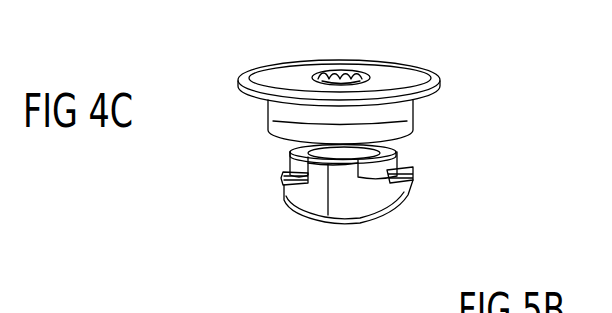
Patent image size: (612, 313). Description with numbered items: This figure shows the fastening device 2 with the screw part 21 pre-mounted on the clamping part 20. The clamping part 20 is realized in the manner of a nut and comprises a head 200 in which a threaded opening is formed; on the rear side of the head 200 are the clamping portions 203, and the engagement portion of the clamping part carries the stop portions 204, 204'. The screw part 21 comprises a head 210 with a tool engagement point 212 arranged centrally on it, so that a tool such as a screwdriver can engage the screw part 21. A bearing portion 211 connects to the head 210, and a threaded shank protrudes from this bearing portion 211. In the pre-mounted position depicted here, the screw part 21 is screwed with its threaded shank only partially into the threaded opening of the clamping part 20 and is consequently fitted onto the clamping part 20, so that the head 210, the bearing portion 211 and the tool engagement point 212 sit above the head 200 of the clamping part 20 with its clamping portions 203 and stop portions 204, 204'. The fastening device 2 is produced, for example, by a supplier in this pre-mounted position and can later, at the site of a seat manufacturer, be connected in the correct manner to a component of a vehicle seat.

The fastening device 2 is at (246, 156).
The clamping part 20 is at (394, 203).
The head 200 is at (343, 172).
The clamping portions 203 is at (300, 177).
The stop portion 204 is at (364, 195).
The stop portion 204' is at (334, 238).
The screw part 21 is at (420, 101).
The head 210 is at (244, 96).
The bearing portion 211 is at (401, 120).
The tool engagement point 212 is at (343, 72).